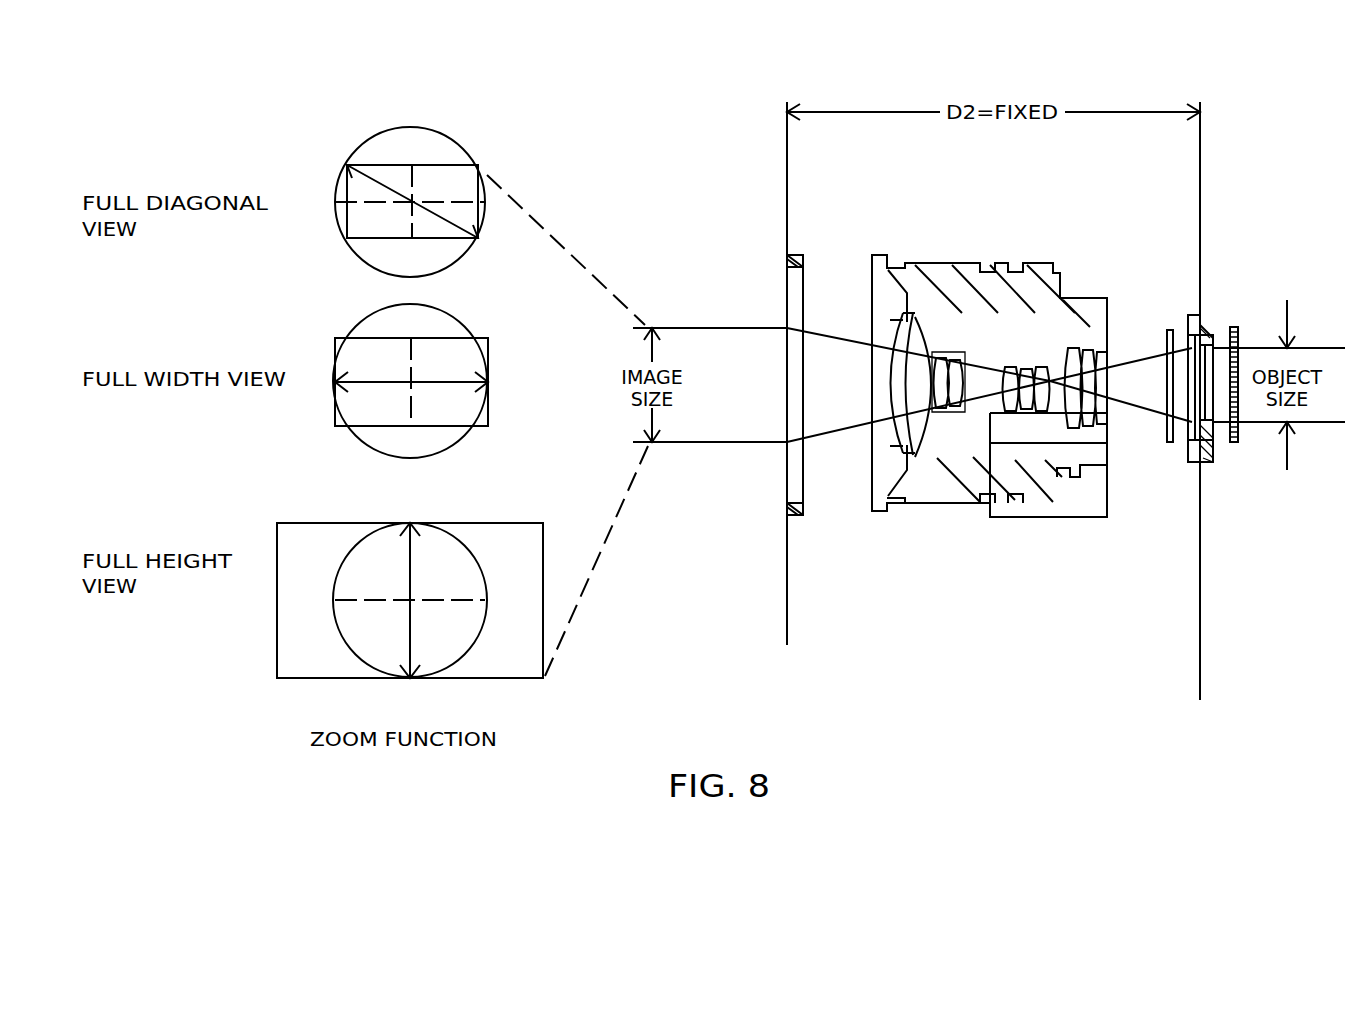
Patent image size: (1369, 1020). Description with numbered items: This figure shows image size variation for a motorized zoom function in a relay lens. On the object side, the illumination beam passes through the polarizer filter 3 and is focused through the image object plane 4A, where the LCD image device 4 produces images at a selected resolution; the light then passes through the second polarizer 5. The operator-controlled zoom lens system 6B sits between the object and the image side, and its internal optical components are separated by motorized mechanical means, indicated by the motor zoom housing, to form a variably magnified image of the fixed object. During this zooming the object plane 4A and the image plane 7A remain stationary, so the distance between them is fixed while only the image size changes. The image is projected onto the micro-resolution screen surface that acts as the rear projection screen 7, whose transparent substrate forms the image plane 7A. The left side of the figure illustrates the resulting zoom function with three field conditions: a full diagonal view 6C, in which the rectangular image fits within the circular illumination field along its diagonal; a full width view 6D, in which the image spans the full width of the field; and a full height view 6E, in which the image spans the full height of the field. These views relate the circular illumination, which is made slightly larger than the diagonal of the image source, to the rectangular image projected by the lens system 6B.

The polarizer filter 3 is at (1236, 330).
The LCD image device 4 is at (1190, 320).
The image object plane 4A is at (1200, 660).
The second polarizer 5 is at (1168, 440).
The lens system 6B is at (933, 262).
The full diagonal view 6C is at (380, 165).
The full width view 6D is at (345, 338).
The full height view 6E is at (316, 522).
The rear projection screen 7 is at (792, 517).
The image plane 7A is at (790, 625).